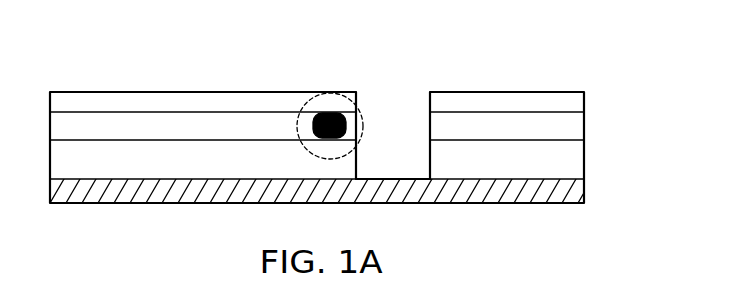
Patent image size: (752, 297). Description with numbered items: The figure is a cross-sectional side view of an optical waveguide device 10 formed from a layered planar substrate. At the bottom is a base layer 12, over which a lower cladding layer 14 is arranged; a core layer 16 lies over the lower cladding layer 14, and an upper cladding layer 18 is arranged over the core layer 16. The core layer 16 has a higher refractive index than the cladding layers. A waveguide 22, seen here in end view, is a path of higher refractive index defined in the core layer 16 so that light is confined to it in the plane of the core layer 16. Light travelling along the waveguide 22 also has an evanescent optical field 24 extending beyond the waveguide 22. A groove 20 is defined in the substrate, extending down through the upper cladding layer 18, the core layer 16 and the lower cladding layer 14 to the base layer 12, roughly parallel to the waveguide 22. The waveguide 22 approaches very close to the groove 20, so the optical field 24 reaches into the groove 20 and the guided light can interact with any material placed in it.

The device 10 is at (592, 66).
The base layer 12 is at (578, 195).
The lower cladding layer 14 is at (578, 165).
The core layer 16 is at (578, 128).
The upper cladding layer 18 is at (578, 99).
The groove 20 is at (395, 123).
The waveguide 22 is at (325, 113).
The evanescent optical field 24 is at (363, 127).